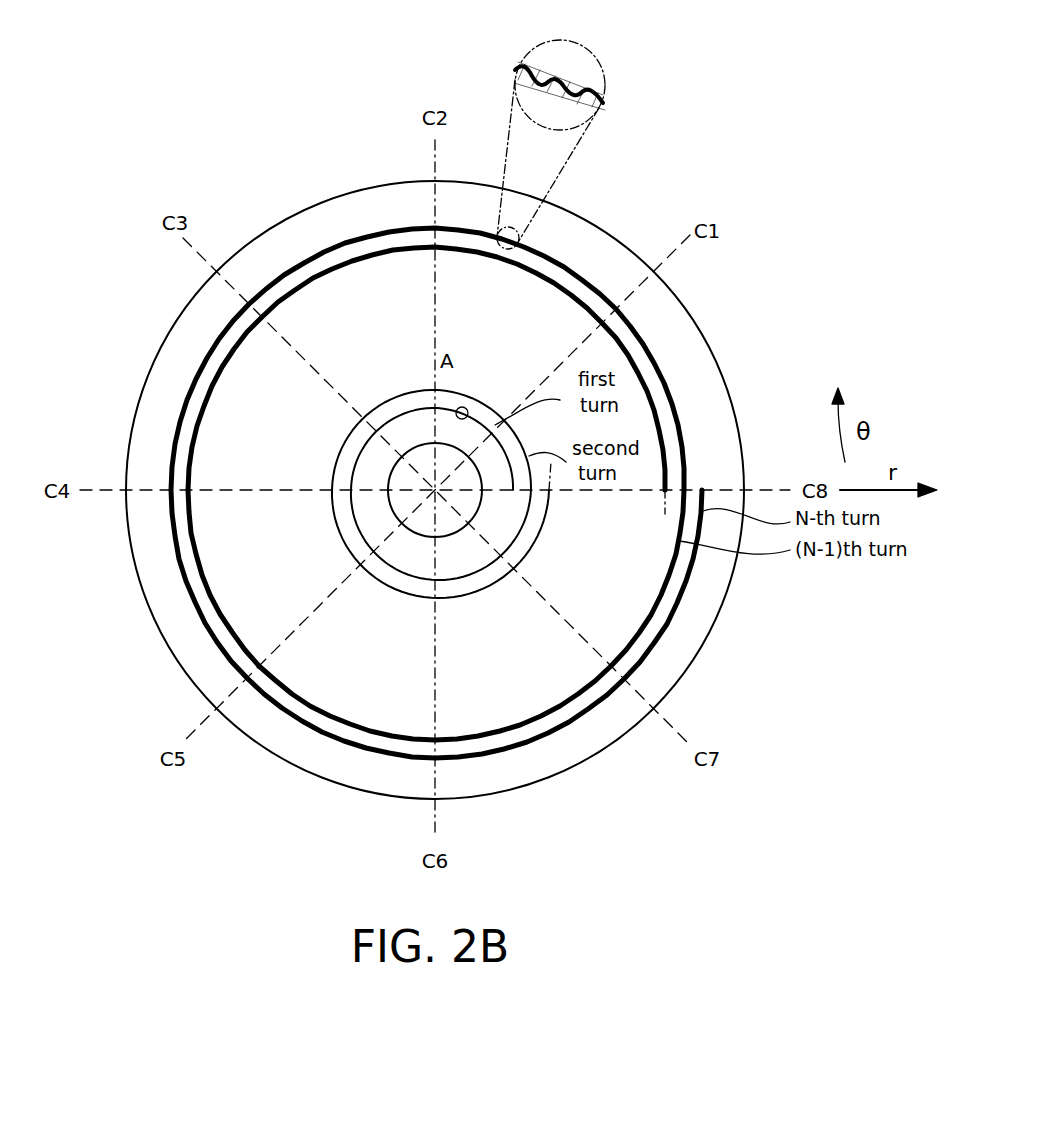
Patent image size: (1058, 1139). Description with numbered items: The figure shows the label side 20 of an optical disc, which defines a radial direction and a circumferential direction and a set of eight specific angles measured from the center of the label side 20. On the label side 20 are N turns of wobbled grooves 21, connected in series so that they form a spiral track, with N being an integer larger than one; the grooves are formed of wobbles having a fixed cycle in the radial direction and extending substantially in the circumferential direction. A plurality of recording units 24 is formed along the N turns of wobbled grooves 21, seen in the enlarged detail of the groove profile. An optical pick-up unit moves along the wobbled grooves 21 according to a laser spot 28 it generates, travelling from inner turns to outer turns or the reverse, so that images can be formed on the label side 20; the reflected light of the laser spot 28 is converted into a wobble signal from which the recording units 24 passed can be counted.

The label side 20 is at (585, 226).
The wobbled grooves 21 is at (643, 353).
The recording units 24 is at (597, 78).
The laser spot 28 is at (466, 408).